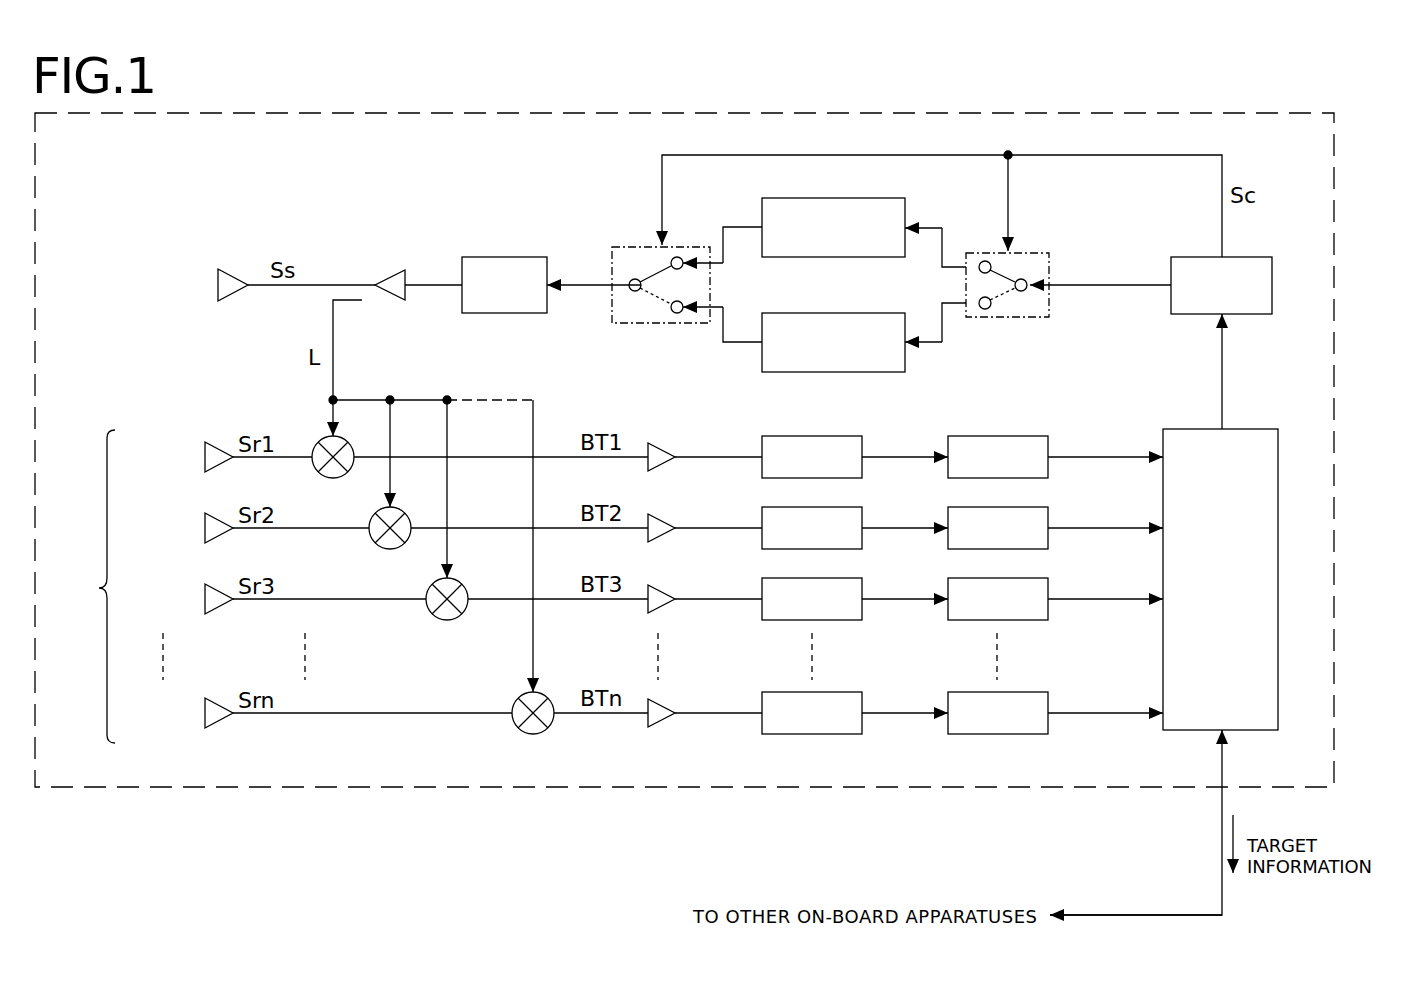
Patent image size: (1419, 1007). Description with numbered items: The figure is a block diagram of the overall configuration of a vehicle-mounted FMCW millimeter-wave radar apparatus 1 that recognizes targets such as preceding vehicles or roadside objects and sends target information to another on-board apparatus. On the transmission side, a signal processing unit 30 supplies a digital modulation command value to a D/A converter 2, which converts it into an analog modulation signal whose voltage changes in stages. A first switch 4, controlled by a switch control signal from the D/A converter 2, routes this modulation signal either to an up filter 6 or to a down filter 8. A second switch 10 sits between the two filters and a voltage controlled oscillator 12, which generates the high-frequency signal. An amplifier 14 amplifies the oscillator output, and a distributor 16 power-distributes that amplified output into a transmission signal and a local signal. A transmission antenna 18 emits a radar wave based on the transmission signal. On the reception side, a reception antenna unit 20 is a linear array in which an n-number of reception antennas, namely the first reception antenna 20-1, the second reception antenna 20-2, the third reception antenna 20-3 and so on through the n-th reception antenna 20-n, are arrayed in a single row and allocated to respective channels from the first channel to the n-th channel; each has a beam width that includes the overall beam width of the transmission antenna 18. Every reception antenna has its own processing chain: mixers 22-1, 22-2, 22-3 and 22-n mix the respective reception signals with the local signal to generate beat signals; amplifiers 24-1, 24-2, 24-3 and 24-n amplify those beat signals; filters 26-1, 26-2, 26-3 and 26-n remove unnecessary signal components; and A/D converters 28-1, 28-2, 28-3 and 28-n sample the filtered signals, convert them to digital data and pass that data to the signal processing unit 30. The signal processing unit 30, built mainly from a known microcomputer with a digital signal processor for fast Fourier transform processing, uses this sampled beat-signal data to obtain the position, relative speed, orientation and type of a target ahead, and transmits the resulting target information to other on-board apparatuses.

The radar apparatus 1 is at (1378, 105).
The D/A converter 2 is at (1252, 257).
The first switch 4 is at (1030, 253).
The up filter 6 is at (862, 198).
The down filter 8 is at (862, 313).
The second switch 10 is at (640, 247).
The voltage controlled oscillator 12 is at (505, 257).
The amplifier 14 is at (397, 269).
The distributor 16 is at (331, 292).
The transmission antenna 18 is at (218, 285).
The reception antenna unit 20 is at (91, 586).
The first reception antenna 20-1 is at (204, 453).
The second reception antenna 20-2 is at (204, 524).
The third reception antenna 20-3 is at (204, 595).
The n-th reception antenna 20-n is at (204, 709).
The first mixer 22-1 is at (333, 478).
The second mixer 22-2 is at (390, 549).
The third mixer 22-3 is at (447, 620).
The n-th mixer 22-n is at (536, 734).
The first amplifier 24-1 is at (660, 445).
The second amplifier 24-2 is at (660, 516).
The third amplifier 24-3 is at (660, 587).
The n-th amplifier 24-n is at (660, 701).
The first filter 26-1 is at (852, 434).
The second filter 26-2 is at (852, 505).
The third filter 26-3 is at (852, 576).
The n-th filter 26-n is at (852, 690).
The first A/D converter 28-1 is at (1041, 434).
The second A/D converter 28-2 is at (1041, 505).
The third A/D converter 28-3 is at (1041, 576).
The n-th A/D converter 28-n is at (1041, 690).
The signal processing unit 30 is at (1263, 429).